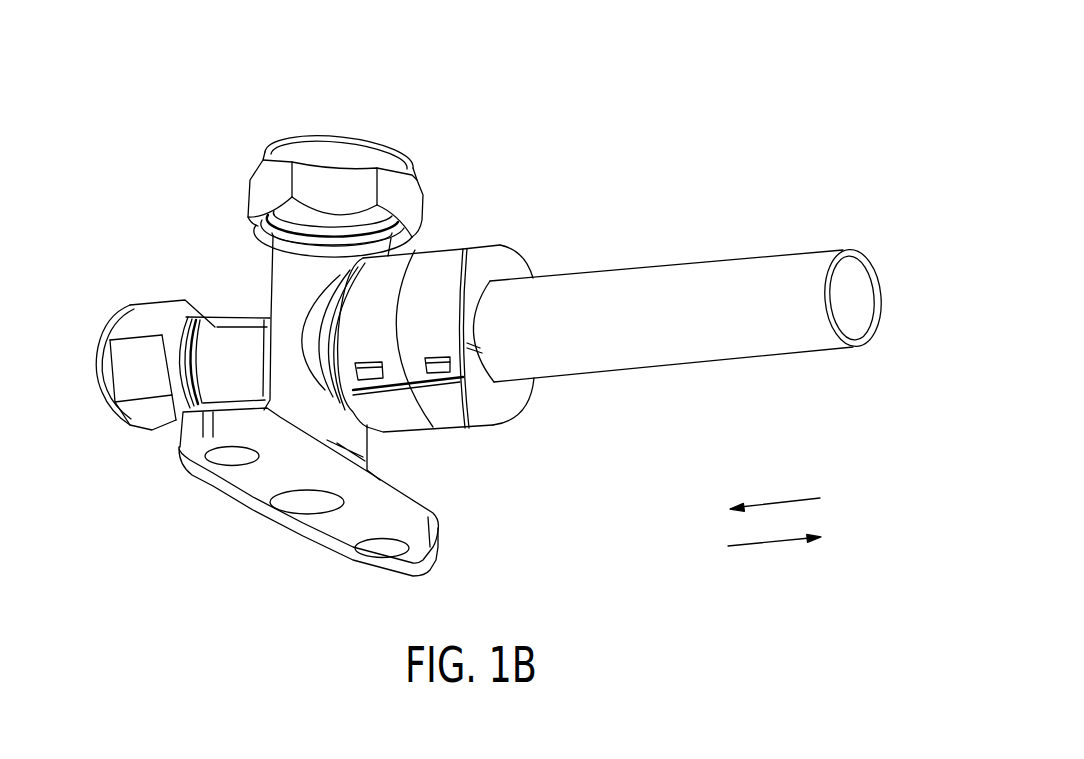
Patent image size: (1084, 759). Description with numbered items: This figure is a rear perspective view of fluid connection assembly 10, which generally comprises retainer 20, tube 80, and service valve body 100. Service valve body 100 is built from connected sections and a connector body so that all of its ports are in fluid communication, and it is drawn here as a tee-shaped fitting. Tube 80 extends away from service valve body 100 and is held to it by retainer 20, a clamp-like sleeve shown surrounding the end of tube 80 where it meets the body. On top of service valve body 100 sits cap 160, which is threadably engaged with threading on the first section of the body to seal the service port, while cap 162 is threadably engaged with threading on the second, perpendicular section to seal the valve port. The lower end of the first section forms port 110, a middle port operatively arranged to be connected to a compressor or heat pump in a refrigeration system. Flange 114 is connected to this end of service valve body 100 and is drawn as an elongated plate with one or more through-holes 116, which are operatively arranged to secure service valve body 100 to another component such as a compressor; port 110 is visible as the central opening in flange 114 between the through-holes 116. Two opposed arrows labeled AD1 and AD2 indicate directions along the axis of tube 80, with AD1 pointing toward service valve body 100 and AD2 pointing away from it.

The fluid connection assembly 10 is at (122, 103).
The retainer 20 is at (448, 262).
The tube 80 is at (690, 285).
The service valve body 100 is at (293, 278).
The port 110 is at (299, 525).
The flange 114 is at (423, 523).
The through-holes 116 is at (218, 478).
The cap 160 is at (348, 163).
The cap 162 is at (162, 313).
The first axial direction AD1 is at (778, 502).
The second axial direction AD2 is at (765, 543).